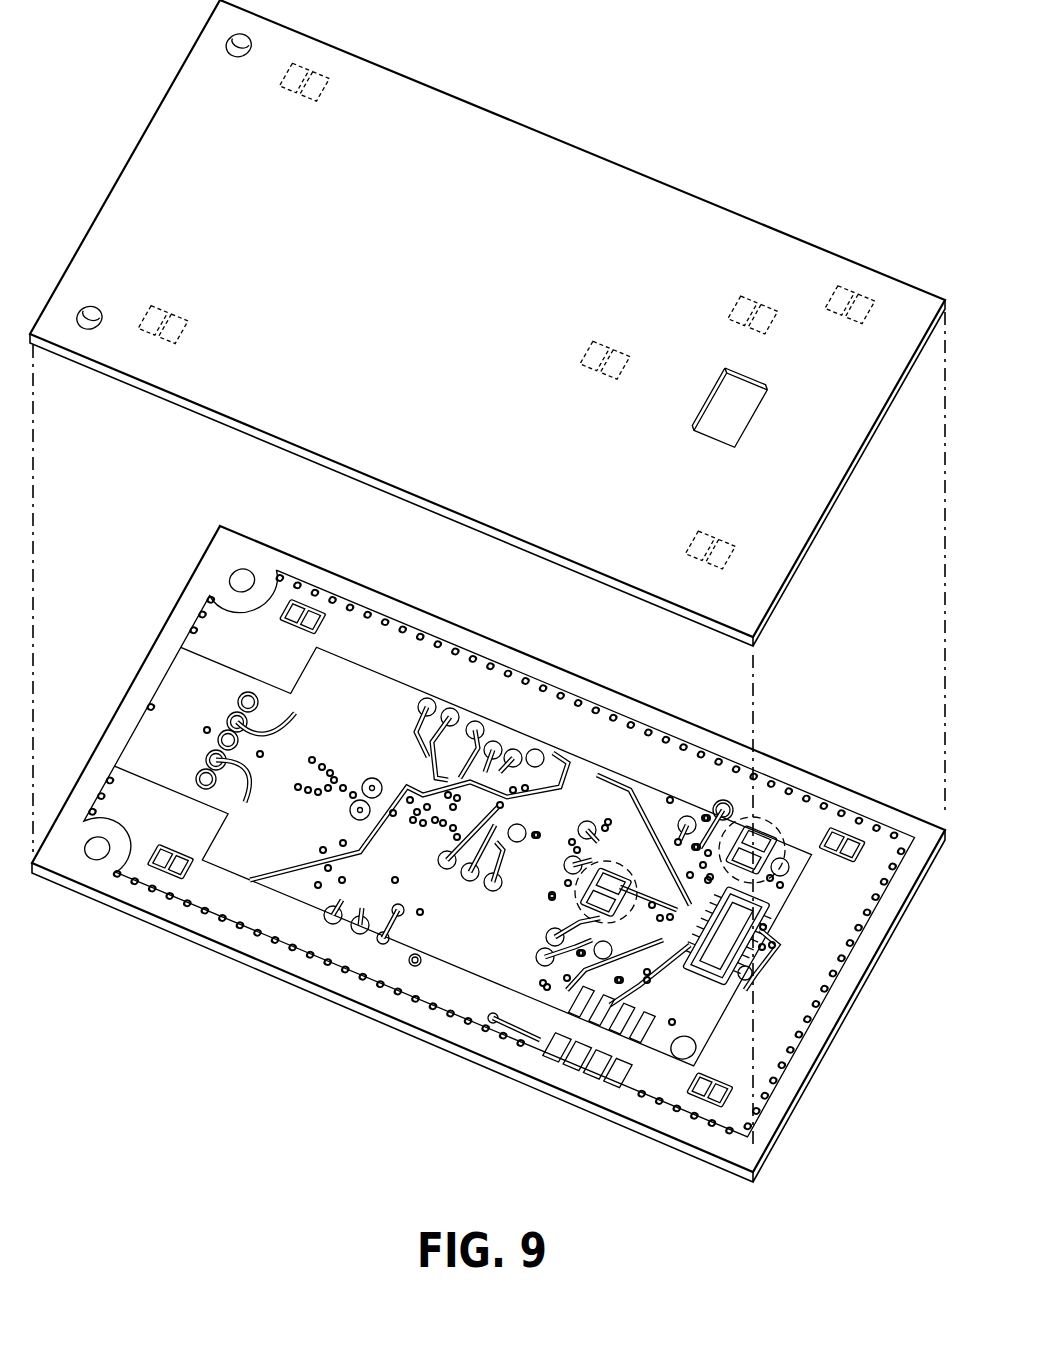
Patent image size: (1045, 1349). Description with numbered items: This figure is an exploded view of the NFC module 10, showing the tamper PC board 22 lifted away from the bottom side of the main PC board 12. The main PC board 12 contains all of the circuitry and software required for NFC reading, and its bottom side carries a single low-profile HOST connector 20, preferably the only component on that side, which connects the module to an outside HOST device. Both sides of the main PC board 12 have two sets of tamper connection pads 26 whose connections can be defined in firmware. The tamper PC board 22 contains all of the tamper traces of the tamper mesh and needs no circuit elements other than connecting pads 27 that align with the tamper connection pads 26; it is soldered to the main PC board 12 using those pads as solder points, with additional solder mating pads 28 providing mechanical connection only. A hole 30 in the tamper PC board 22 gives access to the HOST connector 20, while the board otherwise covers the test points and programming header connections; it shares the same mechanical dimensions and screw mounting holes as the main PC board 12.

The NFC module 10 is at (824, 95).
The main PC board 12 is at (793, 770).
The HOST connector 20 is at (563, 1000).
The tamper PC board 22 is at (456, 125).
The tamper connection pads 26 is at (743, 815).
The connecting pads 27 is at (740, 302).
The solder mating pads 28 is at (157, 307).
The hole 30 is at (693, 437).